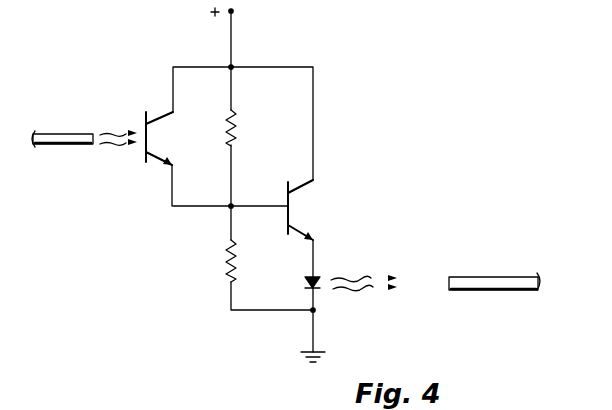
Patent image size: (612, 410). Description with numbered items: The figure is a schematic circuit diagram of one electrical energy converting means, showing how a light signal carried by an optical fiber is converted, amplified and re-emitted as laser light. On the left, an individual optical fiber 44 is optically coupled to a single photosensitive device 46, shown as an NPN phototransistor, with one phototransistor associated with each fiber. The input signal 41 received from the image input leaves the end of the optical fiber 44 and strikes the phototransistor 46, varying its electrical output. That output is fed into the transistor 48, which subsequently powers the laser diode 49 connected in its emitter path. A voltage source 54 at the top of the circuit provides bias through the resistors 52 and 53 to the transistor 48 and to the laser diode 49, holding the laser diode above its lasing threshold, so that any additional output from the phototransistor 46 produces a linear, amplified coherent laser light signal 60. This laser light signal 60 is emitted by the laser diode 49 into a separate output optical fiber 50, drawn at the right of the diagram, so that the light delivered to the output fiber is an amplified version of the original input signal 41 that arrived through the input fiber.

The input signal 41 is at (117, 134).
The optical fiber 44 is at (75, 145).
The photosensitive device 46 is at (146, 160).
The transistor 48 is at (290, 198).
The laser diode 49 is at (321, 272).
The output optical fiber 50 is at (503, 281).
The resistor 52 is at (234, 129).
The resistor 53 is at (226, 262).
The voltage source 54 is at (233, 11).
The laser light signal 60 is at (362, 292).